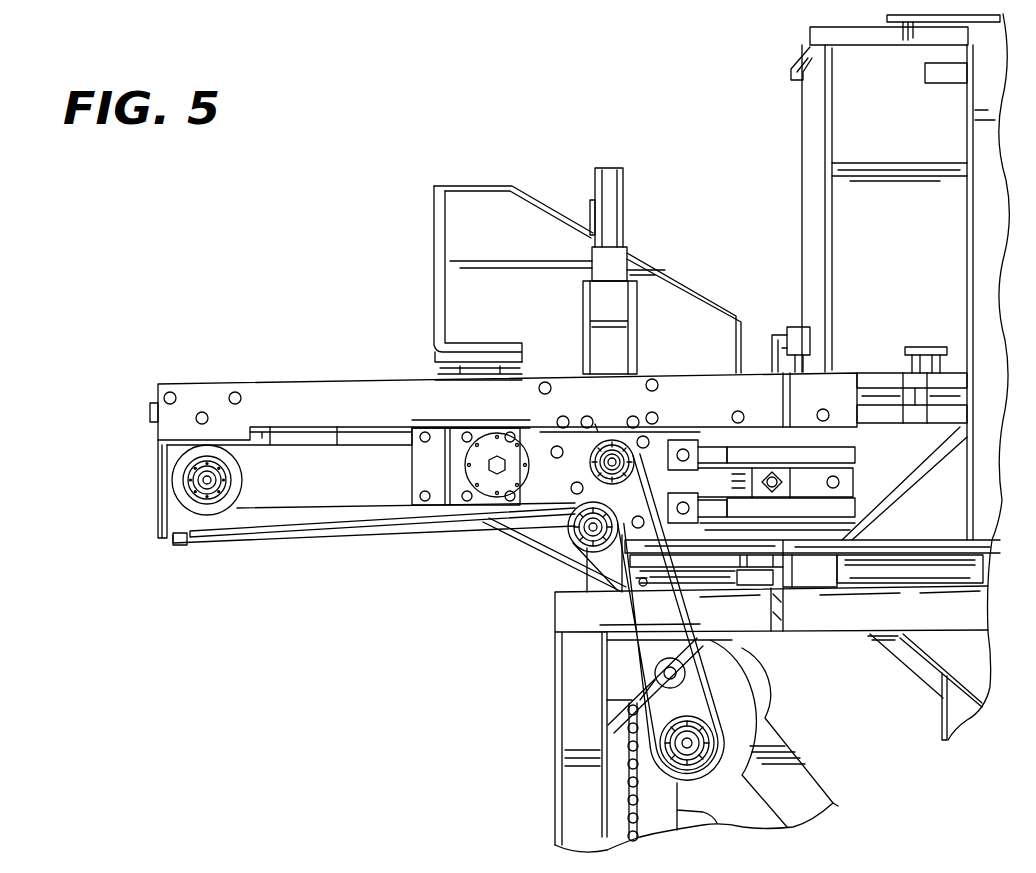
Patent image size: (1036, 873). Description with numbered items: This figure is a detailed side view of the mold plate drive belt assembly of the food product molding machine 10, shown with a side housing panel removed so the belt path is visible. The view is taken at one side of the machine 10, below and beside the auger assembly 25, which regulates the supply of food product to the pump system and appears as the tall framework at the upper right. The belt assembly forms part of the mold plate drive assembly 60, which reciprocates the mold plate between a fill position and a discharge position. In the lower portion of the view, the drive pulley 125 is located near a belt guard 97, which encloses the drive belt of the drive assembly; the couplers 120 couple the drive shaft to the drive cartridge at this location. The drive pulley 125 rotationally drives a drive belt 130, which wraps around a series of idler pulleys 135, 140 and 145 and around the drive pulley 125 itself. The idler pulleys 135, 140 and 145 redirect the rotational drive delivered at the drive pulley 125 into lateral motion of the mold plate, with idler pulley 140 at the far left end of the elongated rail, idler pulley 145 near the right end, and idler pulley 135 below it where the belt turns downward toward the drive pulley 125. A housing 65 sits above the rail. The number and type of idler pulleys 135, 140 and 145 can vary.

The food product molding machine 10 is at (330, 691).
The auger assembly 25 is at (808, 123).
The mold plate drive assembly 60 is at (450, 566).
The housing 65 is at (455, 231).
The belt guard 97 is at (803, 790).
The couplers 120 is at (668, 743).
The drive pulley 125 is at (692, 738).
The drive belt 130 is at (292, 514).
The idler pulley 135 is at (575, 548).
The idler pulley 140 is at (190, 514).
The idler pulley 145 is at (608, 438).